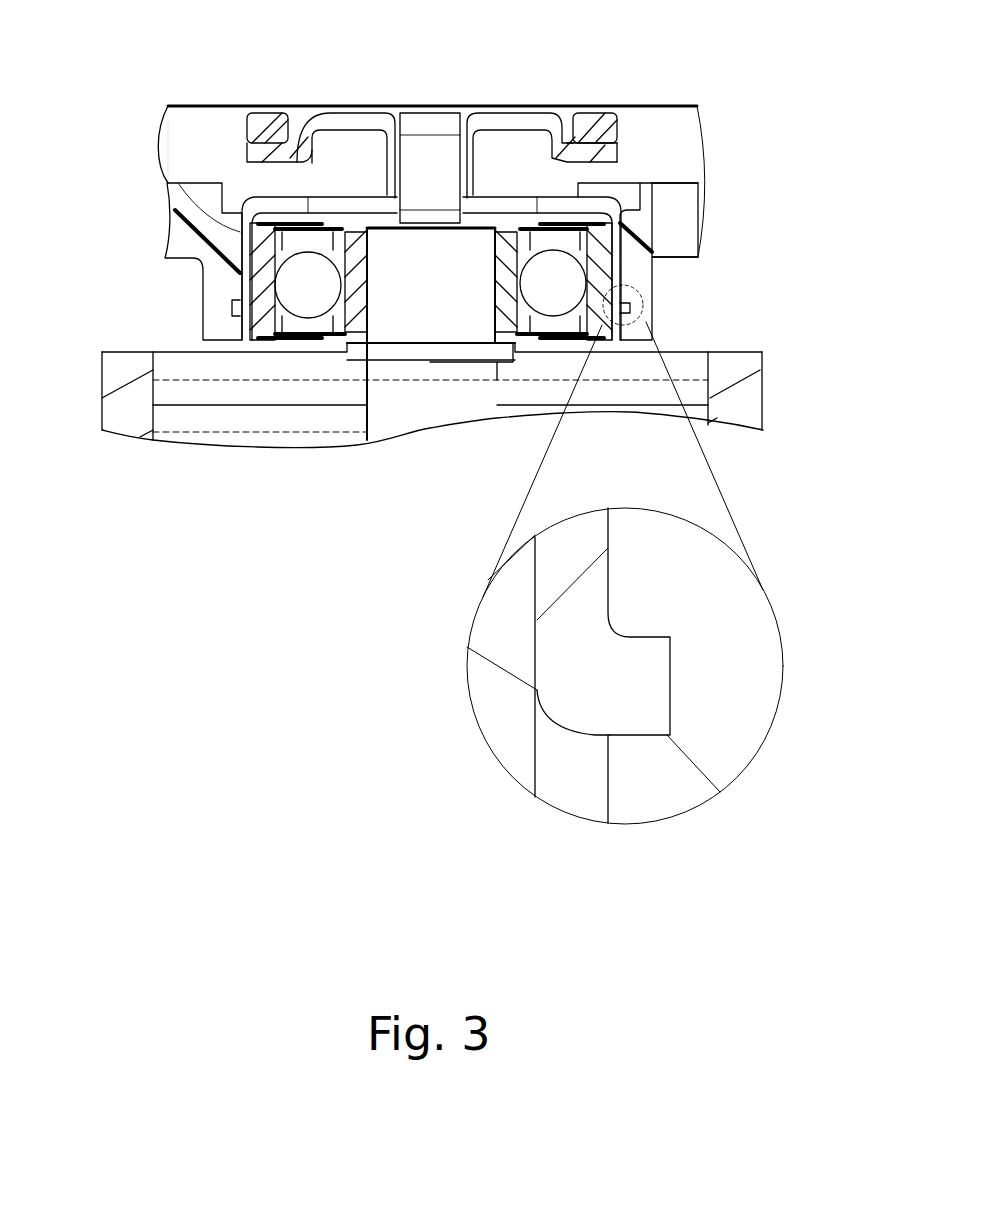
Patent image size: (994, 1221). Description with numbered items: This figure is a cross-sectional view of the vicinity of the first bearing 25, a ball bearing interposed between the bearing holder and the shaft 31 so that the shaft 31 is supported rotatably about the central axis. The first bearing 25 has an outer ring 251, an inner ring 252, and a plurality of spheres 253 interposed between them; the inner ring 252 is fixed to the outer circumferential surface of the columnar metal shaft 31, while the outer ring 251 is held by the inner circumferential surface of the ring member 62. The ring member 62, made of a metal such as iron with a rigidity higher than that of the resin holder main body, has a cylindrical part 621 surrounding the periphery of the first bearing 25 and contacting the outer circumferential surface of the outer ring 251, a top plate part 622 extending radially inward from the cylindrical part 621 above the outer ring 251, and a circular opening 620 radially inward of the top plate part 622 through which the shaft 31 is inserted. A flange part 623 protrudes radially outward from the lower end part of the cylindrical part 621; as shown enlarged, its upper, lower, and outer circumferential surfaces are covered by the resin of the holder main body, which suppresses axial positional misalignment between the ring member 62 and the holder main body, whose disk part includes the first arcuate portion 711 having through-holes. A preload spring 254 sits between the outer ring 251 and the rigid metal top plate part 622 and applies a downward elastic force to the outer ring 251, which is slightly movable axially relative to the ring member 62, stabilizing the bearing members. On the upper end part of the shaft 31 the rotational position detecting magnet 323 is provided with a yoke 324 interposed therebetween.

The first bearing 25 is at (620, 270).
The outer ring 251 is at (263, 320).
The inner ring 252 is at (352, 320).
The spheres 253 is at (313, 275).
The preload spring 254 is at (552, 185).
The shaft 31 is at (452, 317).
The ring member 62 is at (504, 197).
The opening 620 is at (460, 170).
The cylindrical part 621 is at (186, 122).
The top plate part 622 is at (280, 207).
The flange part 623 is at (653, 685).
The rotational position detecting magnet 323 is at (597, 130).
The yoke 324 is at (618, 158).
The first arcuate portion 711 is at (220, 287).